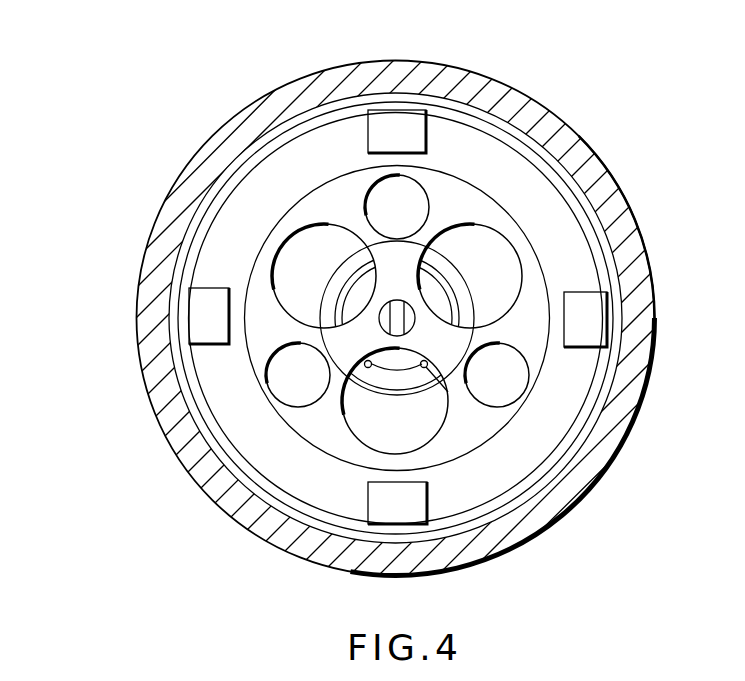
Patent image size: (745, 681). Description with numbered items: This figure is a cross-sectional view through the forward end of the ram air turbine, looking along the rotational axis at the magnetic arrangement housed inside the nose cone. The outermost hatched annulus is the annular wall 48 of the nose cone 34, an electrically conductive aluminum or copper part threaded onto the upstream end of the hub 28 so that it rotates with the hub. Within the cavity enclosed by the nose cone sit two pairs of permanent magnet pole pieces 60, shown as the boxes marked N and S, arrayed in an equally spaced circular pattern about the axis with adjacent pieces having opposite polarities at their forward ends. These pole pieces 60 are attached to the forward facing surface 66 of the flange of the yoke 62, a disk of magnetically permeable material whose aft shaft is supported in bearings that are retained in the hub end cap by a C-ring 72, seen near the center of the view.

The hub 28 is at (259, 136).
The nose cone 34 is at (176, 203).
The annular wall 48 is at (304, 121).
The permanent magnet pole pieces 60 is at (190, 297).
The yoke 62 is at (607, 179).
The forward facing surface 66 is at (522, 168).
The C-ring 72 is at (366, 367).